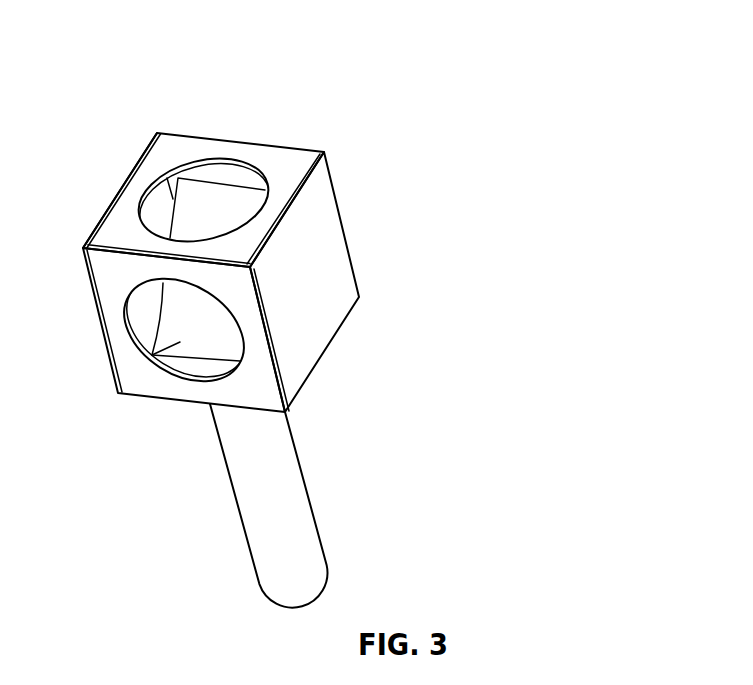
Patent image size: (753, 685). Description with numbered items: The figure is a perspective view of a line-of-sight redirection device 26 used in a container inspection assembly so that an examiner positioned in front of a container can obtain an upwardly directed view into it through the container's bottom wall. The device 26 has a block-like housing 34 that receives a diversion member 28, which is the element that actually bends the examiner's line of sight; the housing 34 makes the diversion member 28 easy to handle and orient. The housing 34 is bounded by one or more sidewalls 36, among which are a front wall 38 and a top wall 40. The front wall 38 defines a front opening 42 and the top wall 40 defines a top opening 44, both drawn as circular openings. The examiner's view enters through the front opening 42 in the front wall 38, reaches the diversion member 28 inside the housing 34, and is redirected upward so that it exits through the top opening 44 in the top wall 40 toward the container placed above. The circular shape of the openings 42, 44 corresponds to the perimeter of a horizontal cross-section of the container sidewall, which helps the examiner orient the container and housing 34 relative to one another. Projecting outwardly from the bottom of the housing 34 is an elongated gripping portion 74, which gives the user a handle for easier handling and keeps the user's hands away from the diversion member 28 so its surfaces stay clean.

The line-of-sight redirection device 26 is at (440, 66).
The diversion member 28 is at (152, 355).
The housing 34 is at (147, 148).
The sidewalls 36 is at (98, 283).
The front wall 38 is at (257, 393).
The top wall 40 is at (280, 160).
The front opening 42 is at (177, 375).
The top opening 44 is at (222, 163).
The gripping portion 74 is at (302, 532).